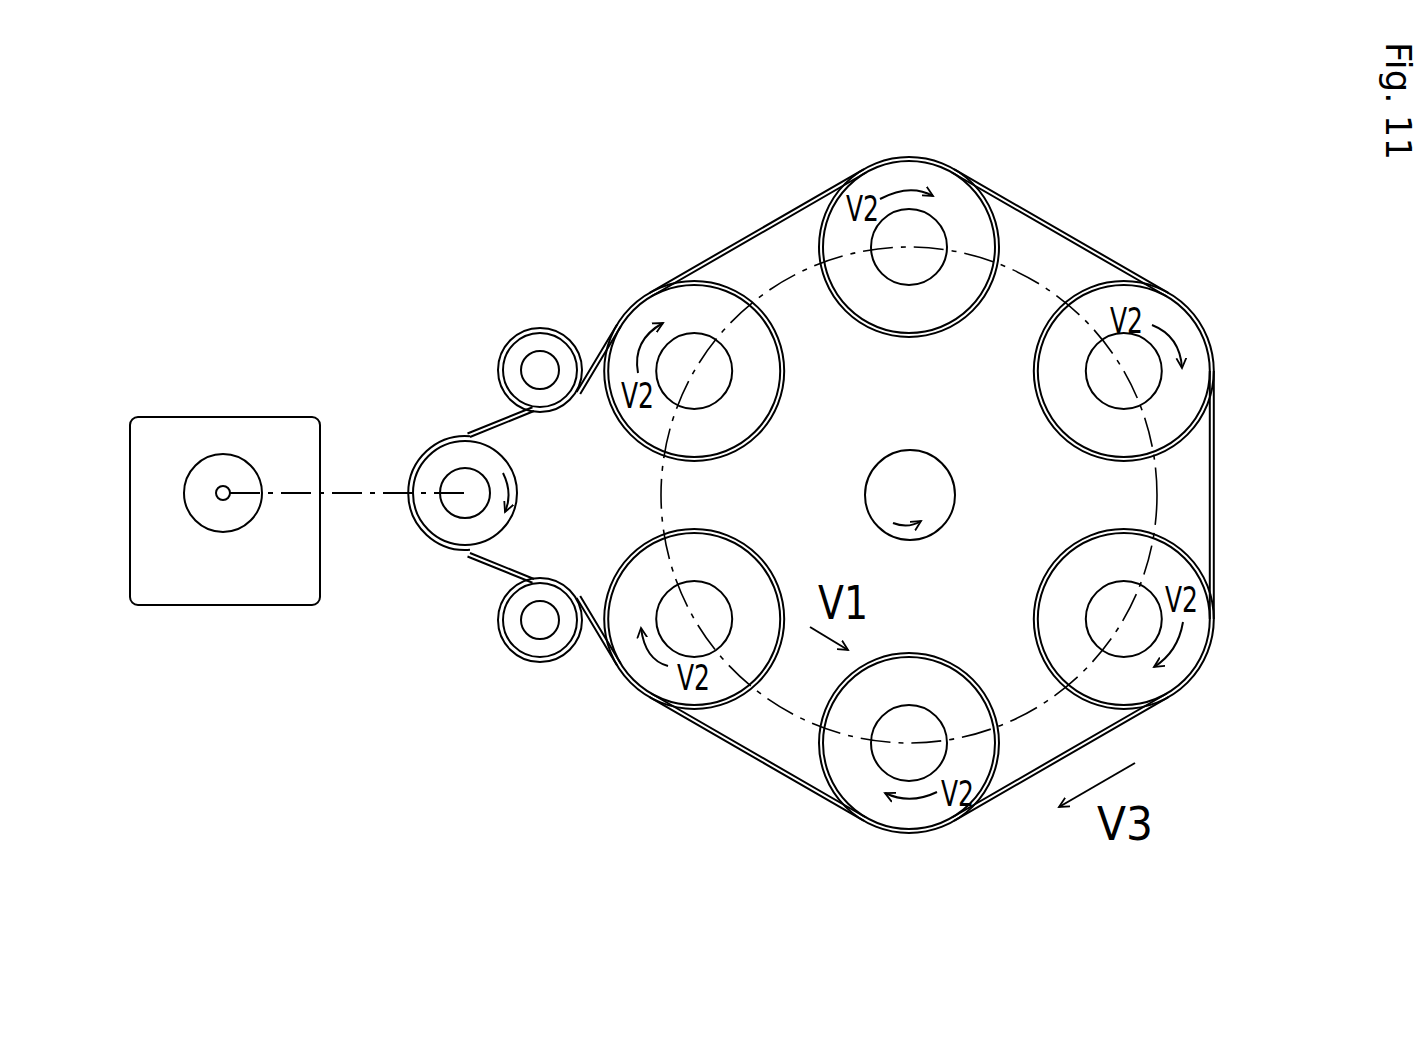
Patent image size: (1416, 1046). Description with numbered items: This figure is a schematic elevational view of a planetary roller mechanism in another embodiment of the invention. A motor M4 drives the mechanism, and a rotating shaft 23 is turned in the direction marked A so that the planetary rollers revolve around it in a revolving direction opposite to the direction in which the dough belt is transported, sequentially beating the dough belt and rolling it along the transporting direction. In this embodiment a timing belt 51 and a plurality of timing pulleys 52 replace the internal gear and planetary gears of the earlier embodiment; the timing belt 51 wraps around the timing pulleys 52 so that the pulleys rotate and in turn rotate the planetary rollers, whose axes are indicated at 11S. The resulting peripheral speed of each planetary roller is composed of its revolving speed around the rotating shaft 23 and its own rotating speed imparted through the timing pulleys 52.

The timing belt 51 is at (1082, 241).
The timing pulleys 52 is at (930, 170).
The roller shaft 11S is at (888, 236).
The rotating shaft 23 is at (923, 458).
The motor M4 is at (262, 427).